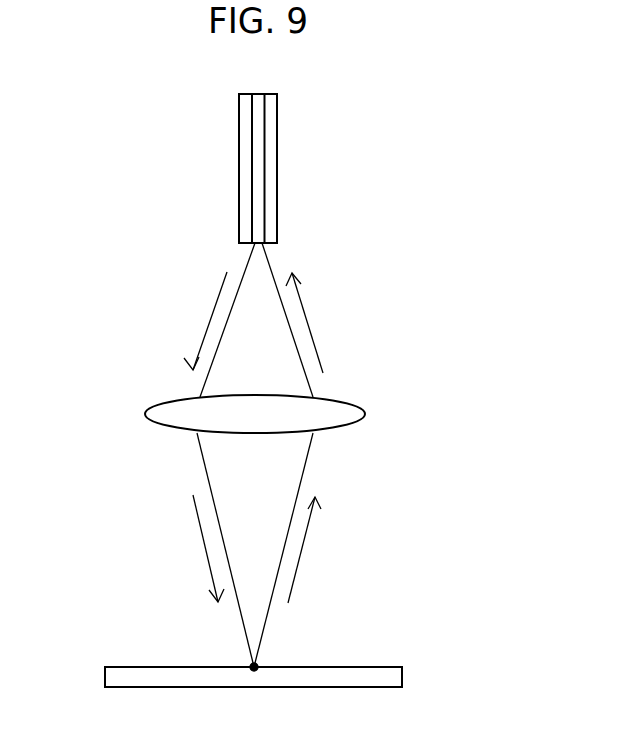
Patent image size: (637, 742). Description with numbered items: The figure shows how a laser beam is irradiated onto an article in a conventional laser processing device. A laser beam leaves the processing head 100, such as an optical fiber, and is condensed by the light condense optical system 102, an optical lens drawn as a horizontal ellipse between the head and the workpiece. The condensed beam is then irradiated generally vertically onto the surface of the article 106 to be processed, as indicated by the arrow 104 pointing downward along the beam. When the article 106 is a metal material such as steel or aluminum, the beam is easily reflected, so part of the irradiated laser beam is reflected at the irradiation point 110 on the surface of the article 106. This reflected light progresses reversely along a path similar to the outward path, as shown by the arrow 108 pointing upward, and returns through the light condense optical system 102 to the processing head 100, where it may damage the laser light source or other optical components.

The processing head 100 is at (205, 145).
The light condense optical system 102 is at (145, 390).
The arrow 104 is at (198, 522).
The article to be processed 106 is at (390, 667).
The arrow 108 is at (305, 537).
The irradiation point 110 is at (258, 665).